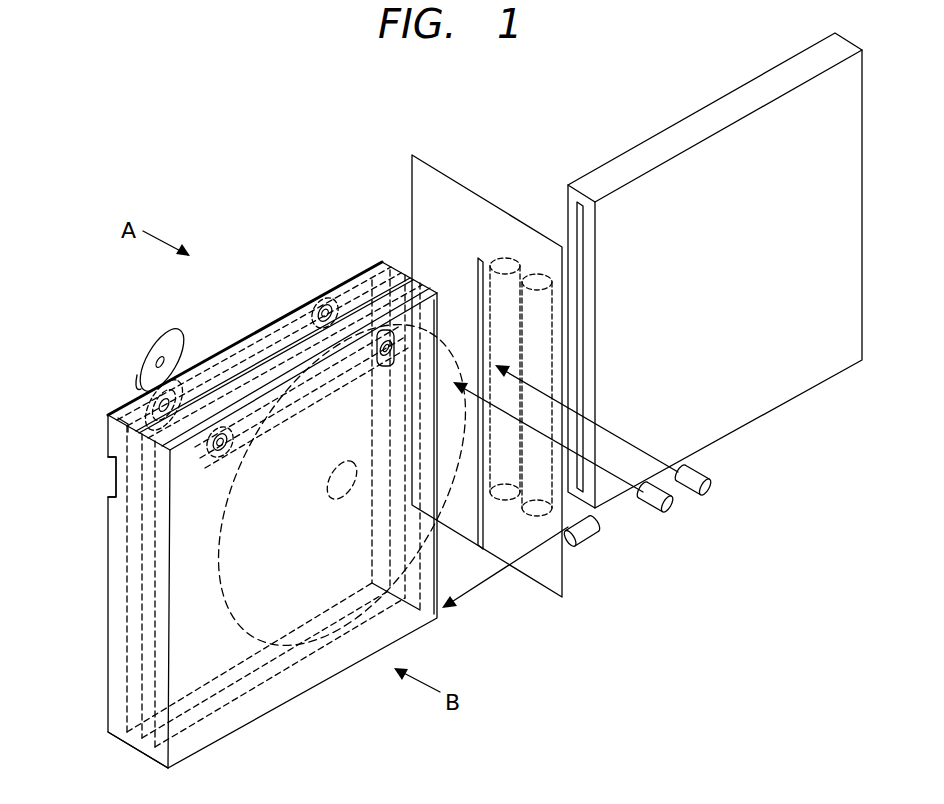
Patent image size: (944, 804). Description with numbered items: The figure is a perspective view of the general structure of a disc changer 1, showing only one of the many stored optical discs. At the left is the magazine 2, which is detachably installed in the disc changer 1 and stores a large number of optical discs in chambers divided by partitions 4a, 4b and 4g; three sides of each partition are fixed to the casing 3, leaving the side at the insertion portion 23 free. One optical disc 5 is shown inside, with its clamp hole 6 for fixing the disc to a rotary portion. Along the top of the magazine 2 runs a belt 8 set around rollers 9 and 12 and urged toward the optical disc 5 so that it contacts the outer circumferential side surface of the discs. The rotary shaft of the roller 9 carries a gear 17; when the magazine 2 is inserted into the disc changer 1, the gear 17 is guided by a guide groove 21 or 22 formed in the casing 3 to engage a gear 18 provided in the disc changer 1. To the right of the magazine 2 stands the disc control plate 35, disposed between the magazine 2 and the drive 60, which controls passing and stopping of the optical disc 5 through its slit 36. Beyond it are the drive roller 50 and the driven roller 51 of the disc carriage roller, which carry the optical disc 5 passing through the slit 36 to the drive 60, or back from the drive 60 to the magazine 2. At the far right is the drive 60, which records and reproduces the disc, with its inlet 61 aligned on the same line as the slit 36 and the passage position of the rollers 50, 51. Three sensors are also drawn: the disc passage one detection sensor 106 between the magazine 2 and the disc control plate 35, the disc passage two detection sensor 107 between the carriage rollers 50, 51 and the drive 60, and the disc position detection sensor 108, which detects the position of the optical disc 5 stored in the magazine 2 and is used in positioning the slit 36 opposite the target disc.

The disc changer 1 is at (233, 105).
The magazine 2 is at (237, 342).
The casing 3 is at (108, 432).
The partition 4a is at (127, 552).
The partition 4b is at (142, 606).
The partition 4g is at (155, 660).
The optical disc 5 is at (230, 612).
The clamp hole 6 is at (335, 500).
The belt 8 is at (278, 322).
The roller 9 is at (213, 457).
The roller 12 is at (322, 305).
The gear 17 is at (143, 397).
The gear 18 is at (157, 332).
The guide groove 21 is at (130, 423).
The guide groove 22 is at (110, 482).
The insertion portion 23 is at (417, 275).
The disc control plate 35 is at (410, 178).
The slit 36 is at (477, 270).
The drive roller 50 is at (498, 260).
The driven roller 51 is at (536, 275).
The drive 60 is at (687, 122).
The inlet 61 is at (585, 302).
The disc passage 1 detection sensor 106 is at (670, 507).
The disc passage 2 detection sensor 107 is at (707, 487).
The disc position detection sensor 108 is at (594, 540).